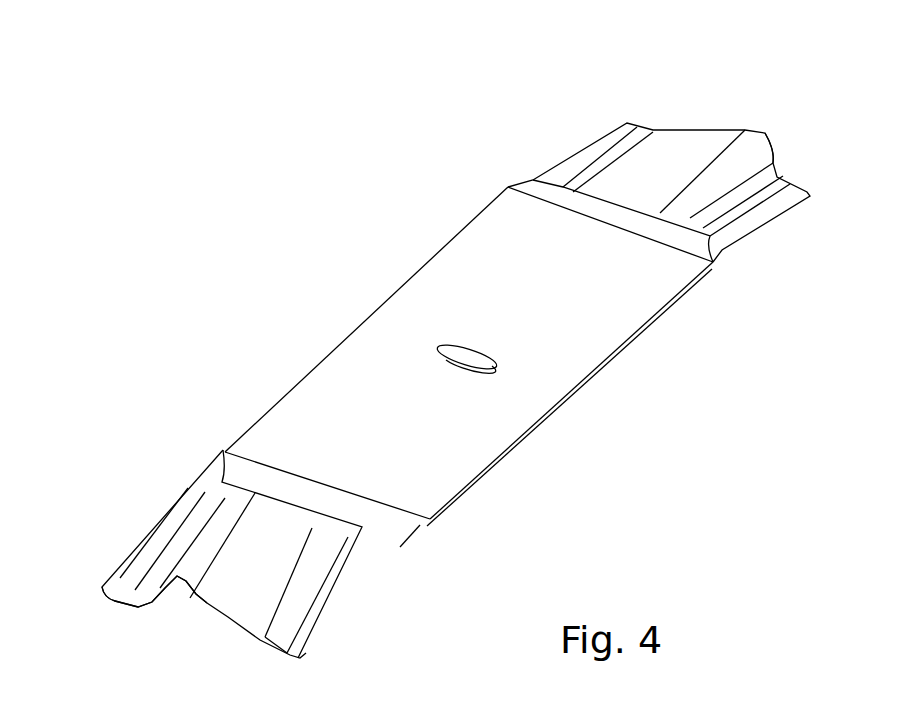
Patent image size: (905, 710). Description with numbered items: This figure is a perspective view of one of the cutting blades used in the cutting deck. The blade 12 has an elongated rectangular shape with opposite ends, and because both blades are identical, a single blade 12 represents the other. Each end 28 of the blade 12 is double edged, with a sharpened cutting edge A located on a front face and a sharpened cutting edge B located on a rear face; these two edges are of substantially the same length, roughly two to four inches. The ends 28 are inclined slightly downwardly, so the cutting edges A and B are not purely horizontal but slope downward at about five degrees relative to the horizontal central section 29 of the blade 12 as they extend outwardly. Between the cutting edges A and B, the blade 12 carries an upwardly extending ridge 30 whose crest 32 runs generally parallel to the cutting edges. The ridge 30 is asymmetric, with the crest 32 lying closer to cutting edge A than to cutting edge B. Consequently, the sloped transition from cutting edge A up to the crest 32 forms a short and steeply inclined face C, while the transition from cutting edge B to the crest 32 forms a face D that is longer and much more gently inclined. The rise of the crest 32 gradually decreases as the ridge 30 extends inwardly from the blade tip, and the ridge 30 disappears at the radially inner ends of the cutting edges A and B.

The blade 12 is at (320, 207).
The end 28 is at (633, 80).
The central section 29 is at (541, 298).
The ridge 30 is at (760, 120).
The crest 32 is at (771, 132).
The cutting edge A is at (770, 232).
The cutting edge B is at (571, 151).
The face C is at (80, 571).
The face D is at (230, 583).